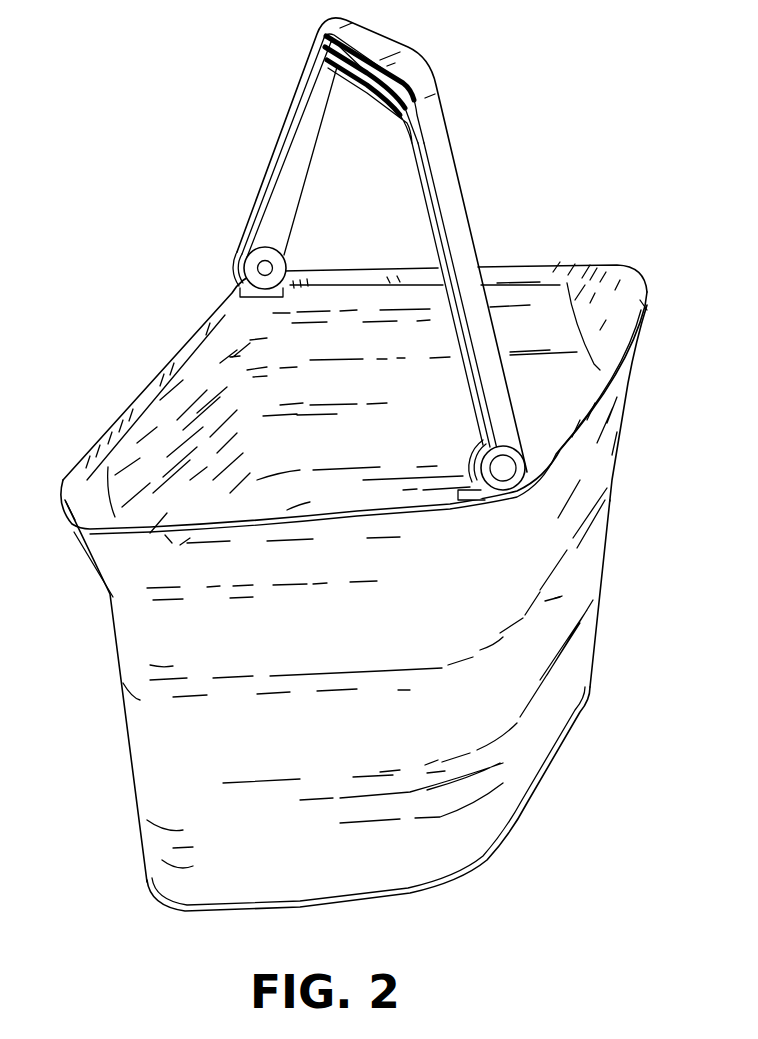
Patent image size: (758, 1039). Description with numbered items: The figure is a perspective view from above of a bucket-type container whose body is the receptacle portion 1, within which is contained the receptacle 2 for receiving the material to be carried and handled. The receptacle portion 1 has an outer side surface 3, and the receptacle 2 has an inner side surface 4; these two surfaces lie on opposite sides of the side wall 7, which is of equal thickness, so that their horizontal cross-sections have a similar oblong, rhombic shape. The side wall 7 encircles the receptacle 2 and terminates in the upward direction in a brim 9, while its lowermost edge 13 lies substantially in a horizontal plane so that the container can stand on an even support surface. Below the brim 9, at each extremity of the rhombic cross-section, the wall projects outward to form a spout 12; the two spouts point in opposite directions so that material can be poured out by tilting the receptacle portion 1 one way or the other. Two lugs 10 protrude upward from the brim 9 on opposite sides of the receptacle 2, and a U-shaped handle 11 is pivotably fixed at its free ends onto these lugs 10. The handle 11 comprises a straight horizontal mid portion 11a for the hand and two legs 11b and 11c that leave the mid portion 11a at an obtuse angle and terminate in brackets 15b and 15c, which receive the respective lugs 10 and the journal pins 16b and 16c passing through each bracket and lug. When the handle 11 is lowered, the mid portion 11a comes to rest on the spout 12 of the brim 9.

The receptacle portion 1 is at (80, 776).
The receptacle 2 is at (255, 430).
The outer side surface 3 is at (590, 483).
The inner side surface 4 is at (514, 318).
The side wall 7 is at (570, 590).
The brim 9 is at (198, 327).
The lug 10 is at (240, 290).
The handle 11 is at (373, 237).
The horizontal mid portion 11a is at (400, 50).
The leg 11b is at (470, 240).
The leg 11c is at (280, 130).
The spout 12 is at (93, 537).
The lowermost edge 13 is at (385, 903).
The bracket 15b is at (470, 453).
The bracket 15c is at (287, 250).
The journal pin 16b is at (515, 447).
The journal pin 16c is at (272, 267).